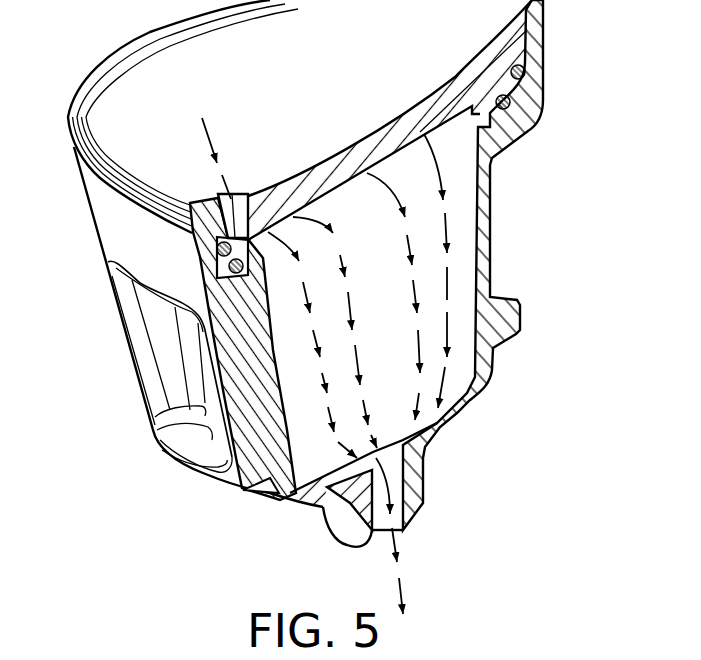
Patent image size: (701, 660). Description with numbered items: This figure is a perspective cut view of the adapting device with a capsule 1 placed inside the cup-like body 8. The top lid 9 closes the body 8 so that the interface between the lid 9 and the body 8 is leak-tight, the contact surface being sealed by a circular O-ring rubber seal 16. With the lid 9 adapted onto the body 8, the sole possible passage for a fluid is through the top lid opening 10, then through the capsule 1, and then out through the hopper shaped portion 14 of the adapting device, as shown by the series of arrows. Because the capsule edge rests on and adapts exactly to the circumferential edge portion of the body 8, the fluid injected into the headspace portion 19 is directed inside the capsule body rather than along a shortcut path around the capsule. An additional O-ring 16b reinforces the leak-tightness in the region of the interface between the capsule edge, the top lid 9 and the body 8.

The capsule 1 is at (390, 293).
The cup-like body 8 is at (103, 218).
The top lid 9 is at (310, 98).
The top lid opening 10 is at (235, 194).
The hopper shaped portion 14 is at (418, 481).
The O-ring rubber seal 16 is at (524, 71).
The O-ring 16b is at (520, 131).
The headspace portion 19 is at (437, 132).